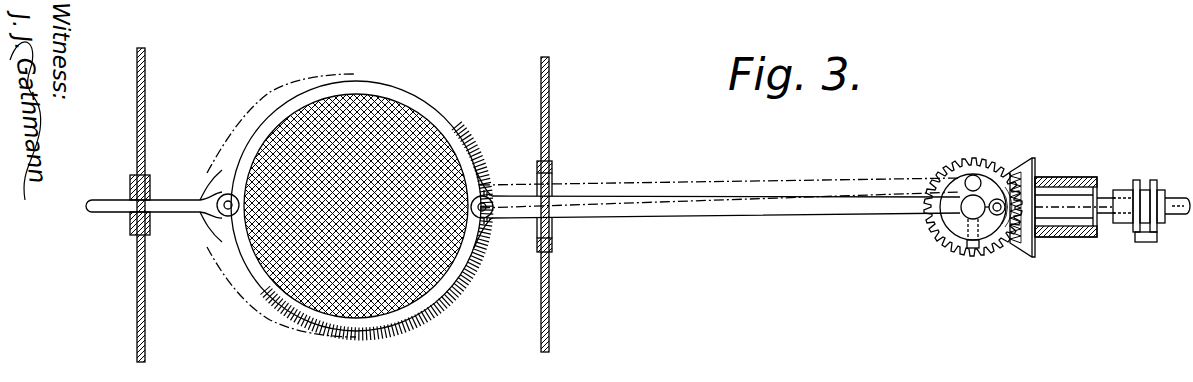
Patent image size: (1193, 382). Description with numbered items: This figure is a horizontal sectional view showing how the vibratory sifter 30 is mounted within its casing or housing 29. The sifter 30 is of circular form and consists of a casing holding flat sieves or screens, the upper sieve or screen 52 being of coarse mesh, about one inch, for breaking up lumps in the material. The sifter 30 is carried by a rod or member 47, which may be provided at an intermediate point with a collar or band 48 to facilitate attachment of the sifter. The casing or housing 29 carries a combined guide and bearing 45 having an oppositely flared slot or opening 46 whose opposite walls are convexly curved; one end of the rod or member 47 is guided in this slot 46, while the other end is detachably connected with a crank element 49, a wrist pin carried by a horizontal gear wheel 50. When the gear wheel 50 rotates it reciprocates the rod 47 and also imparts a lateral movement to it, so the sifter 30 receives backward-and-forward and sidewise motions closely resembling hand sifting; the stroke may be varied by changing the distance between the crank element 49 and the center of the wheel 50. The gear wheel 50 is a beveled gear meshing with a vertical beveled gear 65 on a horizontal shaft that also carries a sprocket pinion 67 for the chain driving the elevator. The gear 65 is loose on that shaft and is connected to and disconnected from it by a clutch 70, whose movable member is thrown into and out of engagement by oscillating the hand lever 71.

The casing or housing 29 is at (143, 67).
The vibratory sifter 30 is at (433, 303).
The combined guide and bearing 45 is at (147, 175).
The slot or opening 46 is at (148, 213).
The rod or member 47 is at (675, 208).
The collar or band 48 is at (413, 98).
The crank element 49 is at (995, 212).
The gear wheel 50 is at (960, 223).
The upper sieve or screen 52 is at (293, 302).
The vertical beveled gear 65 is at (1027, 158).
The sprocket pinion 67 is at (1068, 178).
The clutch 70 is at (1125, 224).
The hand lever 71 is at (1153, 243).